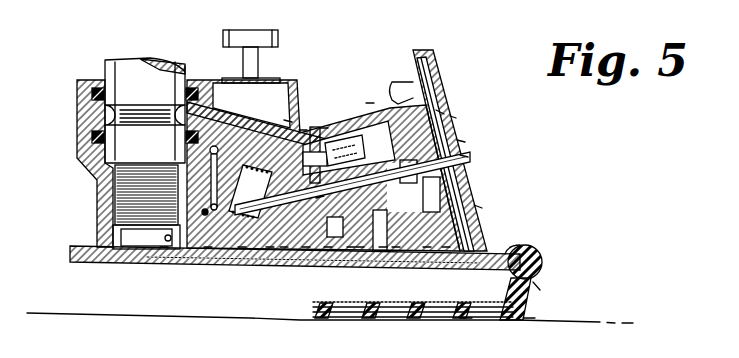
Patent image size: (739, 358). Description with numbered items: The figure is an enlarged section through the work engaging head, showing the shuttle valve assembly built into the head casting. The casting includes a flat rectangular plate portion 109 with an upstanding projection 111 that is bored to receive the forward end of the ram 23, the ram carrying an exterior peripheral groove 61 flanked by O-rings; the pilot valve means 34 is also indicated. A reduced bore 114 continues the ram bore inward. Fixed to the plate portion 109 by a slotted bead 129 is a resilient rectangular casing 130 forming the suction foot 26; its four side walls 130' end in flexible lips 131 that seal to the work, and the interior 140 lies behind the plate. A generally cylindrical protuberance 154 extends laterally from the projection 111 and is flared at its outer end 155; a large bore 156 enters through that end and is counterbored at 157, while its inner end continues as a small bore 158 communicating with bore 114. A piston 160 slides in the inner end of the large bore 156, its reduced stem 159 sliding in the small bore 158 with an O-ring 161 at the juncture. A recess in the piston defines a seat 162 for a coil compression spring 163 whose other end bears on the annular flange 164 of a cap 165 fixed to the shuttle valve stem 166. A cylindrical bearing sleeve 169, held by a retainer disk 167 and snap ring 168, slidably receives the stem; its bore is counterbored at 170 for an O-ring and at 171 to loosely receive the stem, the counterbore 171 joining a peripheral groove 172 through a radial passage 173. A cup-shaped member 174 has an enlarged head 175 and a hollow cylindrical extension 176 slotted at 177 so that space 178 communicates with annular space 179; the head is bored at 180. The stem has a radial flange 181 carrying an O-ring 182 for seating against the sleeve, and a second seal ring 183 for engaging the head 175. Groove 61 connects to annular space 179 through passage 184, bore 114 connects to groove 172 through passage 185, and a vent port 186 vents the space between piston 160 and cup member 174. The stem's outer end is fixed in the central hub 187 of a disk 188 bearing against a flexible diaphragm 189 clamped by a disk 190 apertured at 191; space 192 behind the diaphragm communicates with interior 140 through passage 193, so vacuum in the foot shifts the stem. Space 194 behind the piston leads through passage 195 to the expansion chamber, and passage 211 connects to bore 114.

The ram 23 is at (103, 66).
The suction foot 26 is at (543, 288).
The pilot valve means 34 is at (280, 38).
The peripheral groove 61 is at (166, 108).
The plate portion 109 is at (522, 247).
The projection 111 is at (78, 117).
The bore 114 is at (112, 230).
The bead 129 is at (552, 262).
The casing 130 is at (476, 329).
The side walls 130' is at (544, 299).
The lips 131 is at (529, 320).
The interior of the suction foot 140 is at (397, 318).
The protuberance 154 is at (358, 121).
The flared outer end 155 is at (405, 73).
The large bore 156 is at (332, 135).
The counterbore 157 is at (468, 182).
The small bore 158 is at (193, 263).
The reduced stem 159 is at (208, 262).
The piston 160 is at (270, 263).
The O-ring 161 is at (228, 174).
The seat 162 is at (242, 263).
The coil compression spring 163 is at (258, 153).
The annular flange 164 is at (290, 211).
The cap 165 is at (258, 161).
The shuttle valve stem 166 is at (284, 263).
The retainer disk 167 is at (440, 112).
The snap ring 168 is at (437, 90).
The cylindrical bearing sleeve 169 is at (370, 103).
The counterbore 170 is at (427, 263).
The counterbore 171 is at (383, 263).
The peripheral groove 172 is at (396, 263).
The radial passage 173 is at (366, 160).
The cup-shaped member 174 is at (328, 263).
The enlarged head 175 is at (306, 263).
The hollow cylindrical extension 176 is at (372, 206).
The slot 177 is at (351, 263).
The space 178 is at (324, 128).
The annular space 179 is at (360, 263).
The central bore 180 is at (303, 130).
The radial flange 181 is at (318, 198).
The O-ring 182 is at (320, 132).
The second seal ring 183 is at (307, 130).
The passage 184 is at (262, 122).
The passage 185 is at (164, 262).
The vent port 186 is at (288, 120).
The central hub 187 is at (462, 141).
The disk 188 is at (480, 168).
The flexible diaphragm 189 is at (465, 156).
The disk 190 is at (455, 118).
The aperture 191 is at (478, 207).
The space 192 is at (470, 213).
The passage 193 is at (446, 263).
The space 194 is at (185, 162).
The passage 195 is at (226, 120).
The passage 211 is at (142, 258).